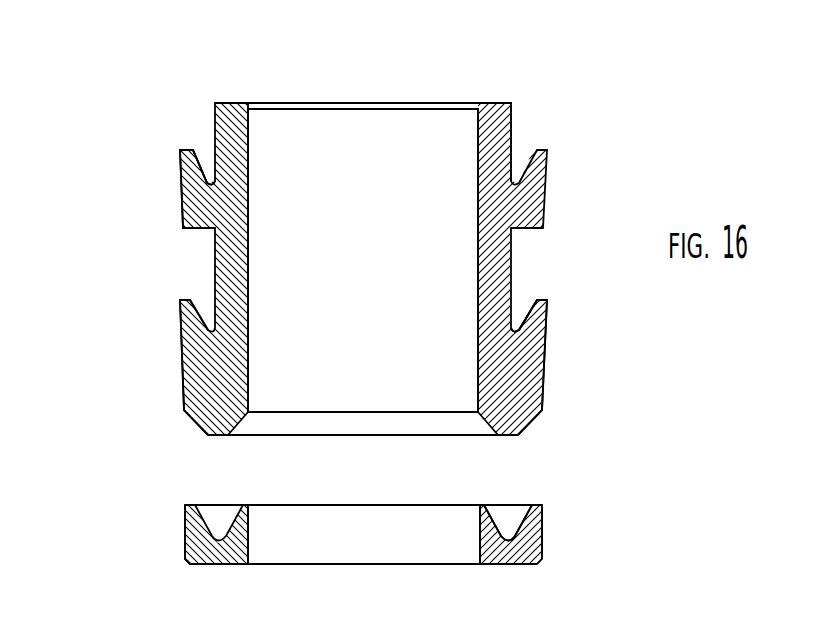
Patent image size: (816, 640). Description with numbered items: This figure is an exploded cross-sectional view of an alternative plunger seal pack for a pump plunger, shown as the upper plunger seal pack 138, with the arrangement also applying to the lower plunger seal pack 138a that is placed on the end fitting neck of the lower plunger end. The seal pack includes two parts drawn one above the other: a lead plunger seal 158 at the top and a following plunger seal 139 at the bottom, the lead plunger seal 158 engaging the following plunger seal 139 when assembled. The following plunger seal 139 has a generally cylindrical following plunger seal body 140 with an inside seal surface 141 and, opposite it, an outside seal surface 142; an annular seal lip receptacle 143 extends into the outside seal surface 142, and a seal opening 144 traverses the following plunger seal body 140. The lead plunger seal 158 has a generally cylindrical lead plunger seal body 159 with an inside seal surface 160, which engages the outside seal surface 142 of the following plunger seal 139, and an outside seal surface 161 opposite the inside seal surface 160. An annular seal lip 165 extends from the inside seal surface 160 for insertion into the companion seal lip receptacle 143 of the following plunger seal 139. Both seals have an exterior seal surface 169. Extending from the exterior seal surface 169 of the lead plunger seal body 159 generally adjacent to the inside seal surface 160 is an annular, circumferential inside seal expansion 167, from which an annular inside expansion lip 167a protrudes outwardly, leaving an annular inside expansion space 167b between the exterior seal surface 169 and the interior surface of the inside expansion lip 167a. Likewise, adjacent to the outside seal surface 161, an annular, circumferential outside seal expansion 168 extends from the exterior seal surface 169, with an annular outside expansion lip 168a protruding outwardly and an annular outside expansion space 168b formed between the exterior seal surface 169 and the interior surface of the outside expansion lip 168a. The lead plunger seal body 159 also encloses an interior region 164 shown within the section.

The upper plunger seal pack 138 is at (113, 62).
The lower plunger seal pack 138a is at (84, 632).
The following plunger seal 139 is at (173, 529).
The following plunger seal body 140 is at (231, 568).
The inside seal surface 141 is at (463, 565).
The outside seal surface 142 is at (404, 505).
The annular seal lip receptacle 143 is at (509, 535).
The seal opening 144 is at (383, 542).
The lead plunger seal 158 is at (530, 100).
The lead plunger seal body 159 is at (226, 100).
The inside seal surface 160 is at (390, 412).
The outside seal surface 161 is at (368, 102).
The cap cavity 164 is at (435, 128).
The annular seal lip 165 is at (218, 437).
The inside seal expansion 167 is at (522, 370).
The inside expansion lip 167a is at (540, 307).
The inside expansion space 167b is at (523, 300).
The outside seal expansion 168 is at (197, 198).
The outside expansion lip 168a is at (178, 160).
The outside expansion space 168b is at (200, 140).
The exterior seal surface 169 is at (511, 138).